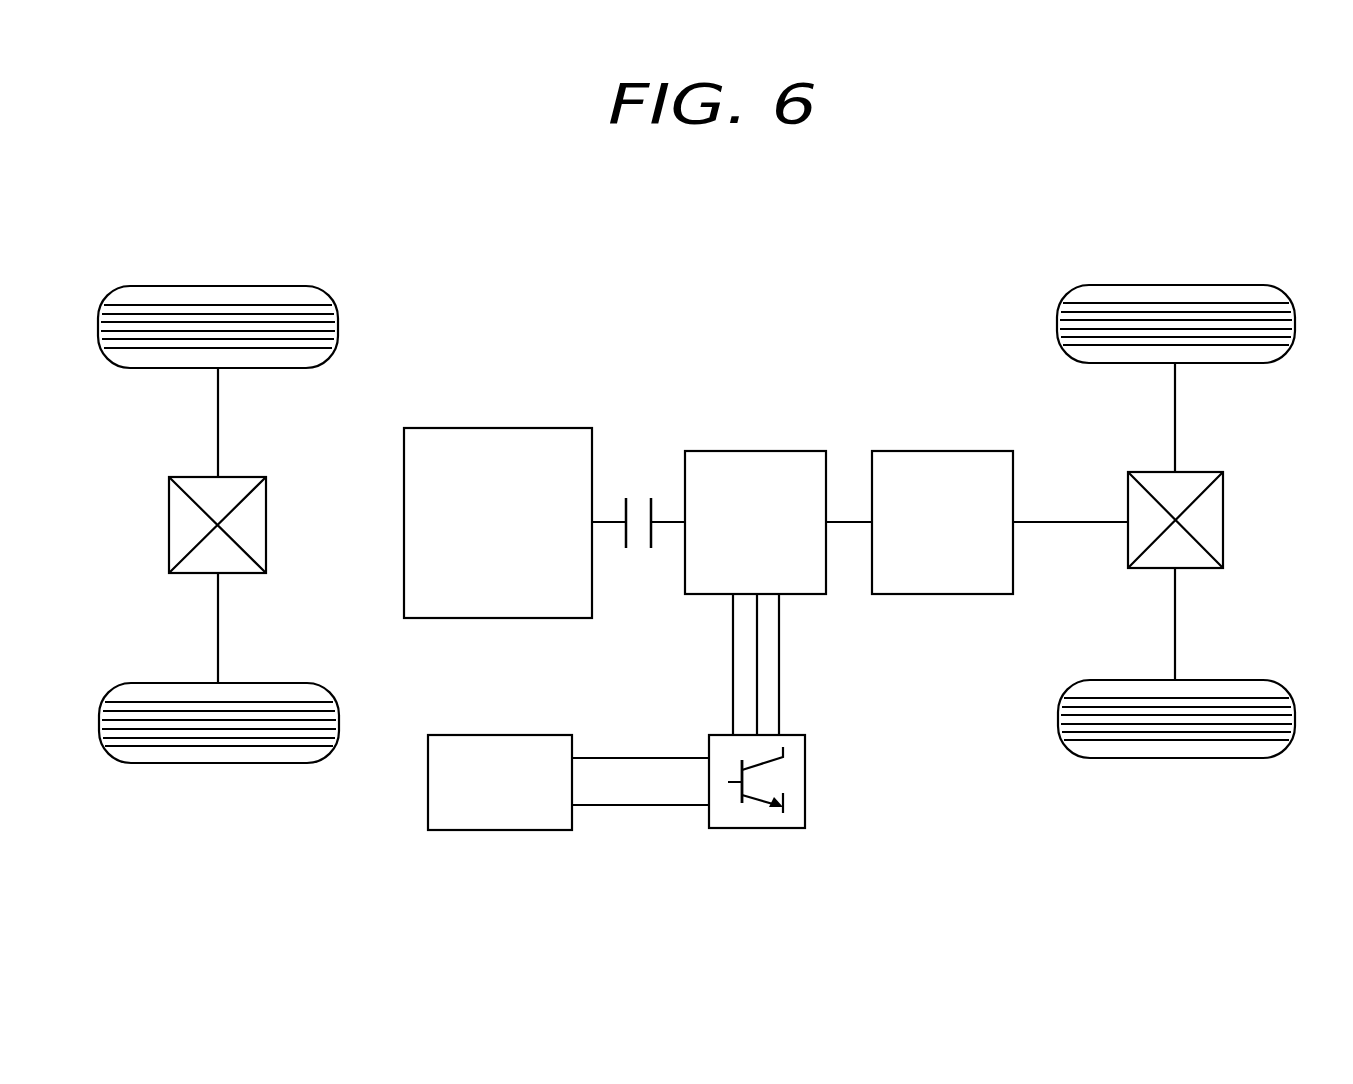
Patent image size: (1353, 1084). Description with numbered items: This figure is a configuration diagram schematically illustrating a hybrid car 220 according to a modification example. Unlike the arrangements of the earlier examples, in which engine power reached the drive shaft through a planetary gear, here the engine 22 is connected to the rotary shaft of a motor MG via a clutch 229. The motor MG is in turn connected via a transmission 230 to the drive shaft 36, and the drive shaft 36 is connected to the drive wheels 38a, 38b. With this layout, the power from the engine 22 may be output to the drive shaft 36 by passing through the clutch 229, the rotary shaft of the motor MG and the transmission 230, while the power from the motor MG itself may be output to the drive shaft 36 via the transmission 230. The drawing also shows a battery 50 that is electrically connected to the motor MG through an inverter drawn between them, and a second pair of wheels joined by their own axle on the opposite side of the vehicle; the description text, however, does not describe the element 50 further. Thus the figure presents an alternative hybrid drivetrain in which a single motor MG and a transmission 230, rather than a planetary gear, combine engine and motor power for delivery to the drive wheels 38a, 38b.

The engine 22 is at (500, 428).
The clutch 229 is at (638, 497).
The motor MG is at (755, 451).
The transmission 230 is at (940, 451).
The drive shaft 36 is at (1060, 518).
The drive wheel 38a is at (1175, 283).
The drive wheel 38b is at (1176, 760).
The battery 50 is at (500, 735).
The hybrid car 220 is at (953, 260).